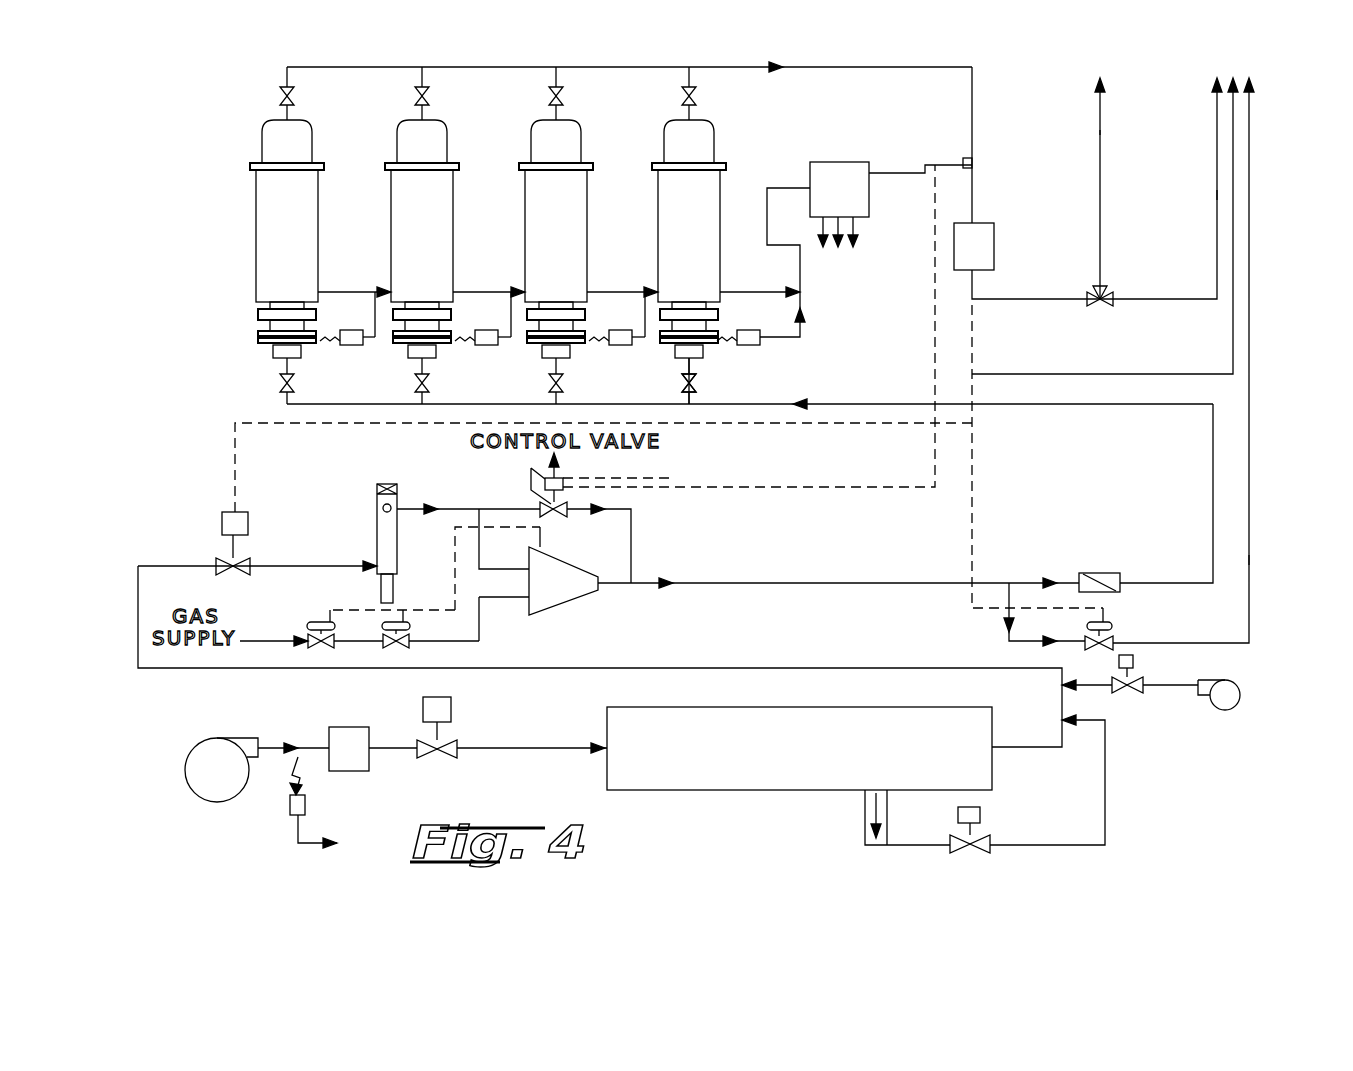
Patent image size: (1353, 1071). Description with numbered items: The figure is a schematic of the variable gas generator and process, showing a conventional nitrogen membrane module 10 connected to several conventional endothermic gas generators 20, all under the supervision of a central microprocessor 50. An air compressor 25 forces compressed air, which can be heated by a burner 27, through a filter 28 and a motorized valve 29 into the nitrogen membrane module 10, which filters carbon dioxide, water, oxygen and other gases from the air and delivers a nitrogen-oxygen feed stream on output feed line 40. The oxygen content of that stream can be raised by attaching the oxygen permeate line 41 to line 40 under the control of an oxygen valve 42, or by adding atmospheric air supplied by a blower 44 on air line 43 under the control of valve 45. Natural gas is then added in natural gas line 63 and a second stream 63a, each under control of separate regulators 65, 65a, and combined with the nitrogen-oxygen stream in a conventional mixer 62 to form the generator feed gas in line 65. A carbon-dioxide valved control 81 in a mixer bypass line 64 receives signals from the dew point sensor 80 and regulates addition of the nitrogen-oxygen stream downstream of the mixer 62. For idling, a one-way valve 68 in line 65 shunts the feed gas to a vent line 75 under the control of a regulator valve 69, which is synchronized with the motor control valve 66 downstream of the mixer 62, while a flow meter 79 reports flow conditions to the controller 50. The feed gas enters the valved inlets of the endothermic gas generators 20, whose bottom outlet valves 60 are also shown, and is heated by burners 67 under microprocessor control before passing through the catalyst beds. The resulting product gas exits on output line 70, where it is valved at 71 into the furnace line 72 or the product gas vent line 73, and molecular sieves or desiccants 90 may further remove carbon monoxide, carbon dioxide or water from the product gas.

The nitrogen membrane module 10 is at (710, 790).
The endothermic gas generator 20 is at (720, 187).
The air compressor 25 is at (235, 800).
The burner 27 is at (305, 808).
The filter 28 is at (360, 727).
The motorized valve 29 is at (451, 705).
The output feed line 40 is at (810, 668).
The oxygen permeate line 41 is at (865, 818).
The oxygen valve 42 is at (972, 840).
The air line 43 is at (1180, 687).
The blower 44 is at (1232, 708).
The valve 45 is at (1133, 662).
The central microprocessor 50 is at (830, 162).
The bed outlet valve 60 is at (697, 384).
The mixer 62 is at (583, 600).
The natural gas line 63 is at (479, 620).
The second natural gas stream 63a is at (455, 588).
The mixer bypass line 64 is at (631, 550).
The regulator / generator feed gas line 65 is at (318, 622).
The regulator 65a is at (405, 623).
The motor control valve 66 is at (248, 520).
The burner 67 is at (749, 346).
The one-way valve 68 is at (1117, 573).
The regulator valve 69 is at (1108, 622).
The output line 70 is at (848, 67).
The valve 71 is at (1103, 292).
The furnace line 72 is at (1100, 133).
The product gas vent line 73 is at (1217, 196).
The vent line 75 is at (1249, 562).
The flow meter 79 is at (377, 505).
The dew point sensor 80 is at (946, 160).
The CO2 valved control 81 is at (555, 518).
The molecular sieves or desiccants 90 is at (994, 246).